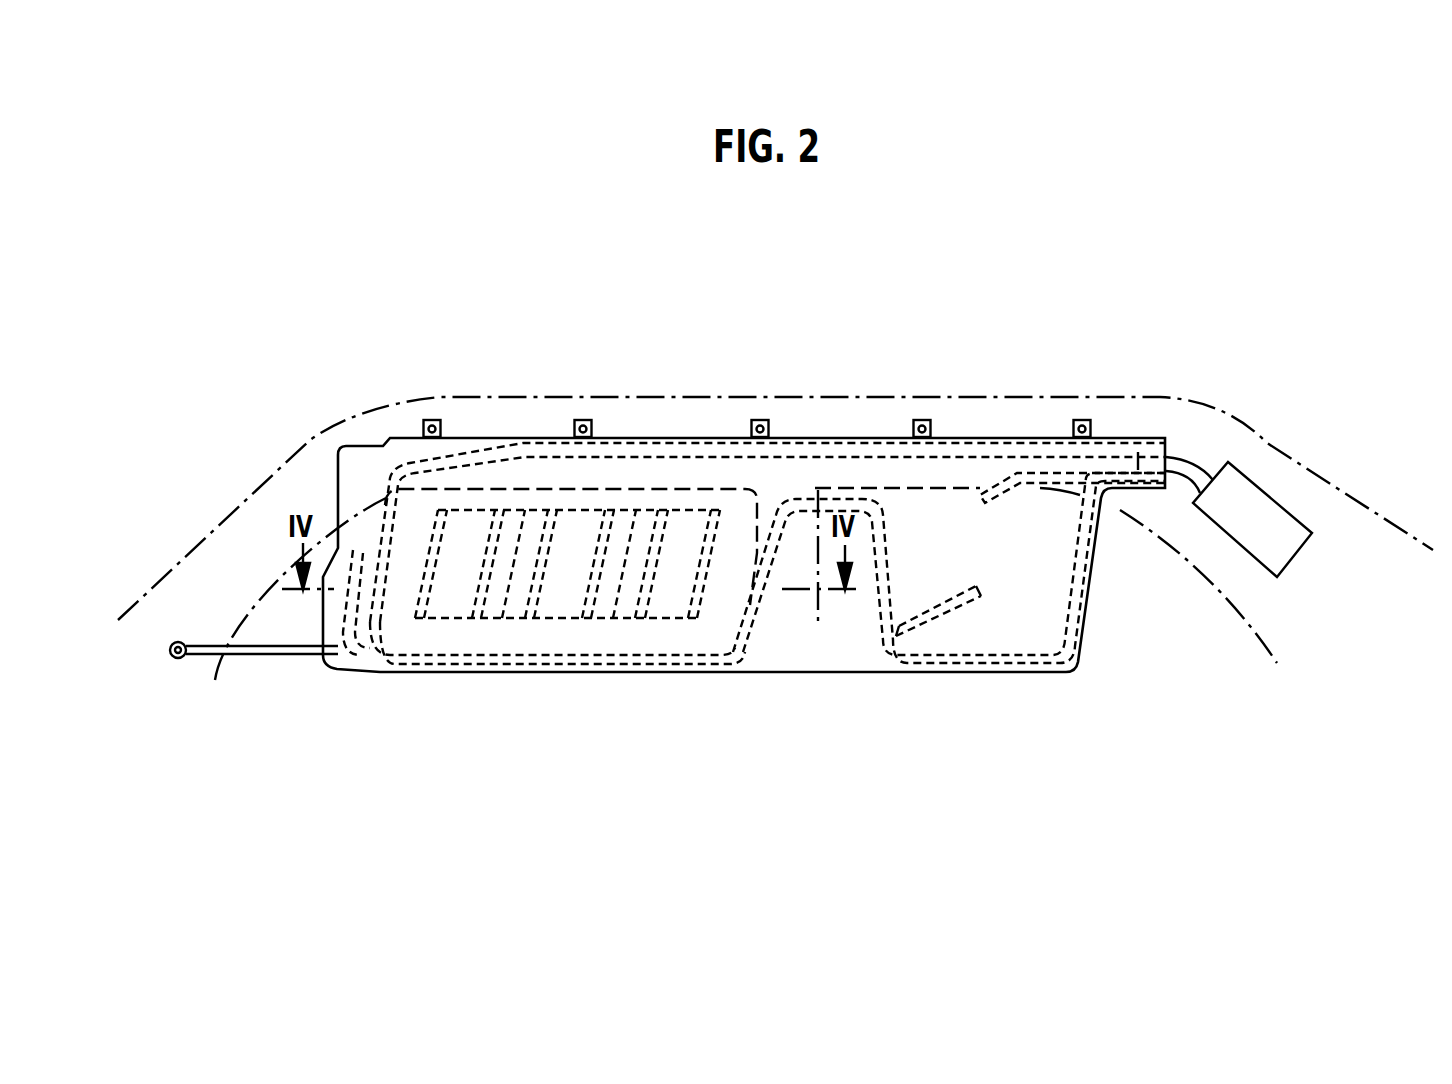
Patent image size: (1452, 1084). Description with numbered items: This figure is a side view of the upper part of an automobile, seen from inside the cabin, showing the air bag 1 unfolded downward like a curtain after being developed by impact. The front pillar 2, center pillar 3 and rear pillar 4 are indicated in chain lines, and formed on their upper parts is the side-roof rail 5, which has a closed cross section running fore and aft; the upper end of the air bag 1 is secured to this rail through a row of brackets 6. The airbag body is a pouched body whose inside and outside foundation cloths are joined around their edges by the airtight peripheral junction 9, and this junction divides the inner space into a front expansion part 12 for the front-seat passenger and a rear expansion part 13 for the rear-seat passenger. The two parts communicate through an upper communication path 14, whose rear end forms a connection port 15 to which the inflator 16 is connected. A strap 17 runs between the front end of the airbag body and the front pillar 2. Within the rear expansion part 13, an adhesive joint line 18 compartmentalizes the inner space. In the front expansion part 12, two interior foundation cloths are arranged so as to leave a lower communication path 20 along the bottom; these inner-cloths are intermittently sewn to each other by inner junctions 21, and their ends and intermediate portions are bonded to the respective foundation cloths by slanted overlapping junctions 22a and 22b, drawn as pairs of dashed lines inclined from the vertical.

The air bag 1 is at (1009, 413).
The front pillar 2 is at (226, 516).
The center pillar 3 is at (818, 602).
The rear pillar 4 is at (1395, 494).
The side-roof rail 5 is at (876, 397).
The brackets 6 is at (431, 420).
The peripheral junction 9 is at (698, 447).
The front expansion part 12 is at (751, 647).
The rear expansion part 13 is at (1072, 660).
The upper communication path 14 is at (798, 473).
The connection port 15 is at (1168, 458).
The inflator 16 is at (1280, 497).
The strap 17 is at (267, 657).
The joint line 18 is at (953, 592).
The lower communication path 20 is at (557, 622).
The inner junctions 21 is at (529, 514).
The overlapping junctions 22a is at (417, 622).
The overlapping junctions 22b is at (470, 622).